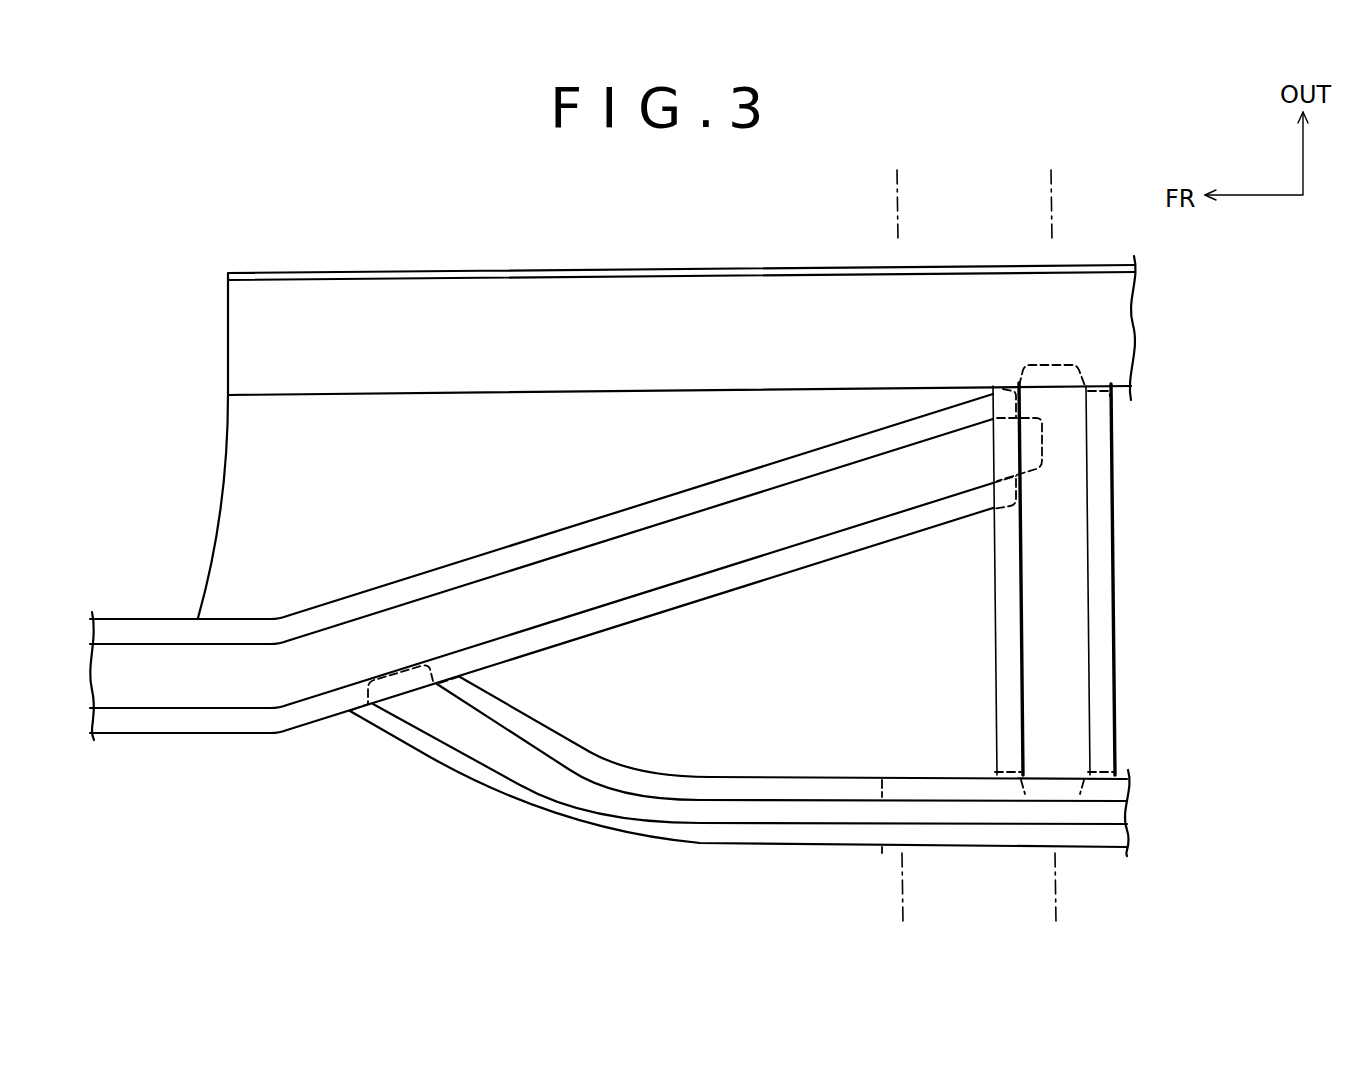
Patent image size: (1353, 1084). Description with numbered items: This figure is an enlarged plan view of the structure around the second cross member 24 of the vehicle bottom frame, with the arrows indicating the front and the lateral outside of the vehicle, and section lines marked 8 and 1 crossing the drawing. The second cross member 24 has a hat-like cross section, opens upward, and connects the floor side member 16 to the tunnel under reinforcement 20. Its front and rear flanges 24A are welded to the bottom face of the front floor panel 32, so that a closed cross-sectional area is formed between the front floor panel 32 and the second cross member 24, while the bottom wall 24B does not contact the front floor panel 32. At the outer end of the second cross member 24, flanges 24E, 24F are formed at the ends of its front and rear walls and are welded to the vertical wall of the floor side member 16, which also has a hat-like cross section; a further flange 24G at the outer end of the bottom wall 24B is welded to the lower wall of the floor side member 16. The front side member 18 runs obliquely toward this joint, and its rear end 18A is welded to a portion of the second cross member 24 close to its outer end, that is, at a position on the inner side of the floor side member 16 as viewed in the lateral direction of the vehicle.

The floor side member 16 is at (683, 289).
The front floor panel 32 is at (237, 528).
The front side member 18 is at (245, 734).
The rear end of the front side member 18A is at (941, 482).
The tunnel under reinforcement 20 is at (687, 845).
The second cross member 24 is at (1065, 531).
The flanges 24A is at (1005, 656).
The bottom wall 24B is at (1070, 548).
The flange 24E is at (1004, 386).
The flange 24F is at (1112, 400).
The flange 24G is at (1050, 363).
The section line for FIG. 8 is at (916, 908).
The section line for FIG. 1 is at (1069, 908).